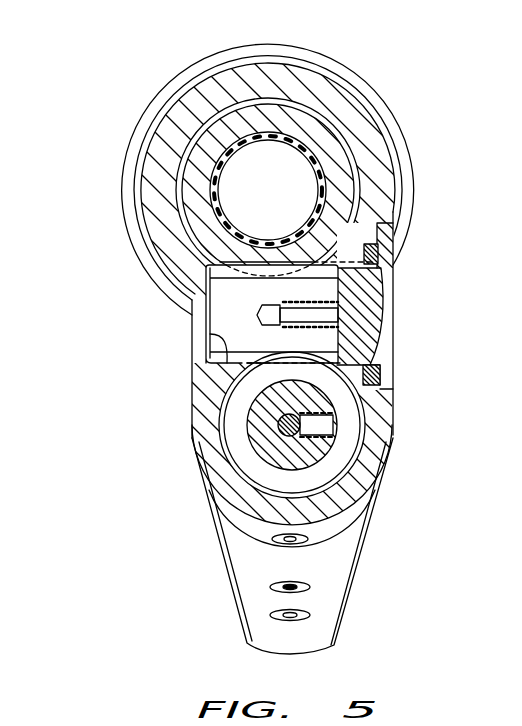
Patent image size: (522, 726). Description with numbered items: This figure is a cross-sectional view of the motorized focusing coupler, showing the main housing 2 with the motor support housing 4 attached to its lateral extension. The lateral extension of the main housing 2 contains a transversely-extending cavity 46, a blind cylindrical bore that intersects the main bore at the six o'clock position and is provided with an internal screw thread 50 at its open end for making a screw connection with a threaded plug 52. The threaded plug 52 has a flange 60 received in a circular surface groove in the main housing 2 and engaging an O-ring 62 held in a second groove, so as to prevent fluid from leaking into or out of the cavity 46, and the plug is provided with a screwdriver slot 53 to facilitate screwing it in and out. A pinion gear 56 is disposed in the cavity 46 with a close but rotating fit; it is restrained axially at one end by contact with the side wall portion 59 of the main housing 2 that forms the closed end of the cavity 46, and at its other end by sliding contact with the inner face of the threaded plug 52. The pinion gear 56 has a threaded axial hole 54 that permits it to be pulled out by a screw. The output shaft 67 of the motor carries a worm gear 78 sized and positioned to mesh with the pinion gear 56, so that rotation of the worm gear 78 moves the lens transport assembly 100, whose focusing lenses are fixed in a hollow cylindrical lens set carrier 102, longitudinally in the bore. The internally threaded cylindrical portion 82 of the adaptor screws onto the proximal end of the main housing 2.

The main housing 2 is at (126, 160).
The motor support housing 4 is at (367, 569).
The cavity 46 is at (207, 334).
The internal screw thread 50 is at (394, 217).
The threaded plug 52 is at (405, 304).
The screwdriver slot 53 is at (384, 282).
The threaded axial hole 54 is at (374, 326).
The pinion gear 56 is at (220, 306).
The side wall portion 59 is at (197, 345).
The flange 60 is at (380, 243).
The O-ring 62 is at (382, 382).
The output shaft 67 is at (280, 436).
The worm gear 78 is at (232, 427).
The first cylindrical portion 82 is at (343, 62).
The lens transport assembly 100 is at (352, 140).
The lens set carrier 102 is at (186, 110).